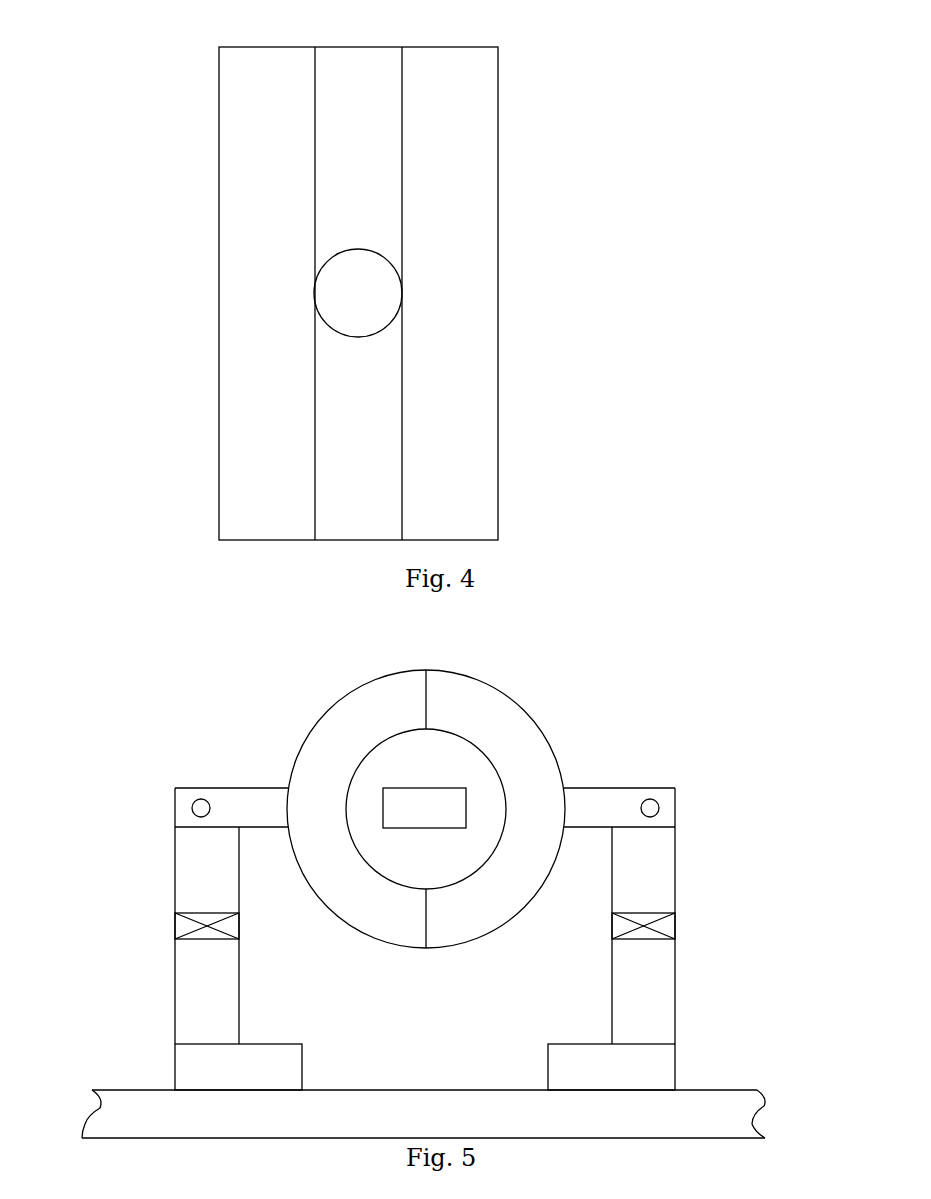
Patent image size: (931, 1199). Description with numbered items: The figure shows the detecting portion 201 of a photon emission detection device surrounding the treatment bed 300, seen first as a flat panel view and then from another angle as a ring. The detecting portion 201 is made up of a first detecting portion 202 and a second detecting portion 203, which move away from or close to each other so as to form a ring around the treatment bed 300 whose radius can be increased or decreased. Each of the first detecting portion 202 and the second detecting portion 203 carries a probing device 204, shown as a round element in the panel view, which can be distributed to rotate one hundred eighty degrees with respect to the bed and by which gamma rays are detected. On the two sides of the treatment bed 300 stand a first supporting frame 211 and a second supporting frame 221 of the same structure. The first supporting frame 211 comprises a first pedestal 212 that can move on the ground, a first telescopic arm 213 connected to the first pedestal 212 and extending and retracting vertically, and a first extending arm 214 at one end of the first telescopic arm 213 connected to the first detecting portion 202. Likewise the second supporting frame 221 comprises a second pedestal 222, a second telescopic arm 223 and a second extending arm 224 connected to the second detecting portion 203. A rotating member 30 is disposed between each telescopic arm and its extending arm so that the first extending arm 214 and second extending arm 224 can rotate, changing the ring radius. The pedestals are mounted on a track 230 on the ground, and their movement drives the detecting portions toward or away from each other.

In FIG. 5, the detecting portion 201 is at (443, 790).
In FIG. 4, the first detecting portion 202 is at (451, 125).
In FIG. 5, the first detecting portion 202 is at (445, 712).
In FIG. 4, the second detecting portion 203 is at (358, 293).
In FIG. 5, the second detecting portion 203 is at (390, 702).
In FIG. 4, the probing device 204 is at (382, 295).
In FIG. 5, the first supporting frame 211 is at (691, 933).
In FIG. 5, the first pedestal 212 is at (656, 1031).
In FIG. 5, the first telescopic arm 213 is at (660, 882).
In FIG. 5, the first extending arm 214 is at (658, 820).
In FIG. 5, the second supporting frame 221 is at (168, 918).
In FIG. 5, the second pedestal 222 is at (202, 1054).
In FIG. 5, the second telescopic arm 223 is at (192, 882).
In FIG. 5, the second extending arm 224 is at (188, 820).
In FIG. 5, the track 230 is at (693, 1115).
In FIG. 5, the rotating member 30 is at (196, 800).
In FIG. 5, the treatment bed 300 is at (450, 808).